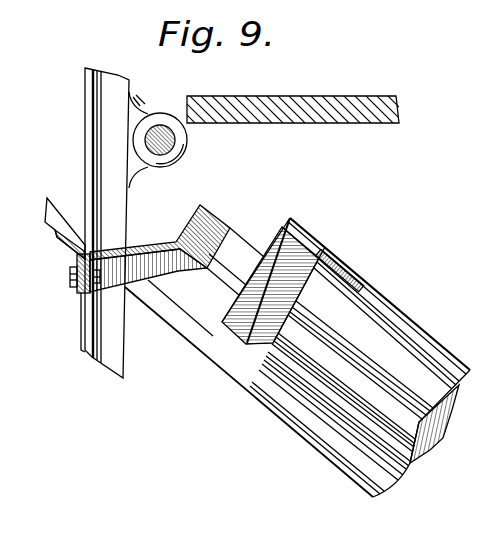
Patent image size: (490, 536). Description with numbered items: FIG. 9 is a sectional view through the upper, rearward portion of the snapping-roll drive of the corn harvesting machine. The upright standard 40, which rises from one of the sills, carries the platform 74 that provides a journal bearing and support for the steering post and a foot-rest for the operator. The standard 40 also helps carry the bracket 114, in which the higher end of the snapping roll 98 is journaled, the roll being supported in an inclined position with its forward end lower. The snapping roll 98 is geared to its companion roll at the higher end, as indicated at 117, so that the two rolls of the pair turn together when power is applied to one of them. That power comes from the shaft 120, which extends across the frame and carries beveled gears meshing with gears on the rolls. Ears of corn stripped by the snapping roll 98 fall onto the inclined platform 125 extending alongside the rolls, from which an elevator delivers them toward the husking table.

The standard 40 is at (85, 91).
The shaft 120 is at (181, 140).
The platform 74 is at (286, 124).
The bracket 114 is at (150, 243).
The platform 125 is at (181, 334).
The gearing 117 is at (325, 258).
The snapping roll 98 is at (346, 357).